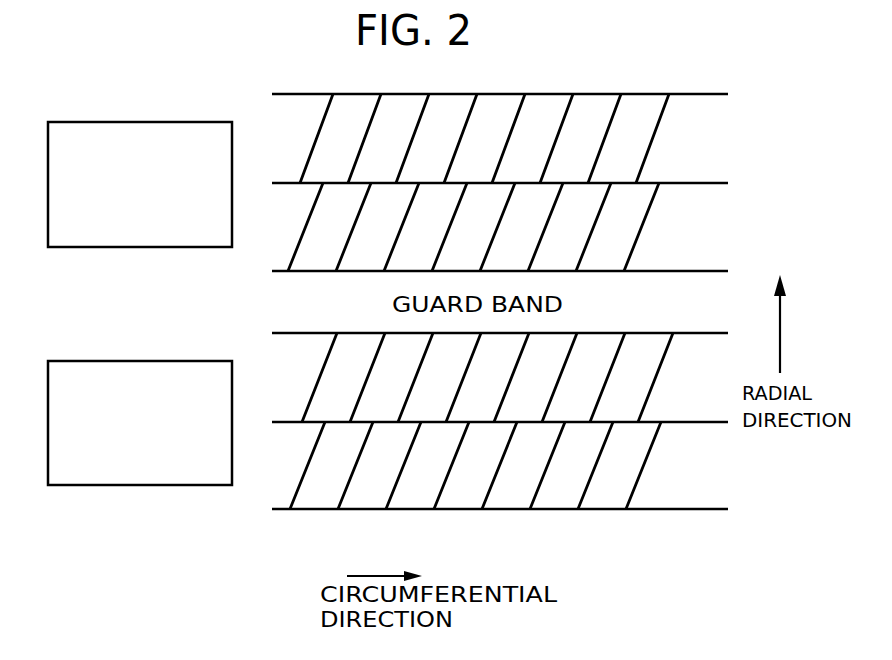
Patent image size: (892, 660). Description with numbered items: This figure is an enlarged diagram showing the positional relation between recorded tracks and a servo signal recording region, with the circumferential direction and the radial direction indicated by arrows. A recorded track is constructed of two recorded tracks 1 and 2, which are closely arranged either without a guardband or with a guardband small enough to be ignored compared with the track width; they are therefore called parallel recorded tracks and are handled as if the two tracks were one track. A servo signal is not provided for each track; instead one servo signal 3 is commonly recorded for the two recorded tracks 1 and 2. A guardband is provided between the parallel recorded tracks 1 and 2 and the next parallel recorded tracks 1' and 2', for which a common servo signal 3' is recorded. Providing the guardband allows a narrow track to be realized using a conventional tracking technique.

The recorded track 1 is at (500, 113).
The recorded track 2 is at (500, 249).
The recorded track 1' is at (514, 355).
The recorded track 2' is at (500, 489).
The servo signal 3 is at (140, 147).
The servo signal 3' is at (140, 386).